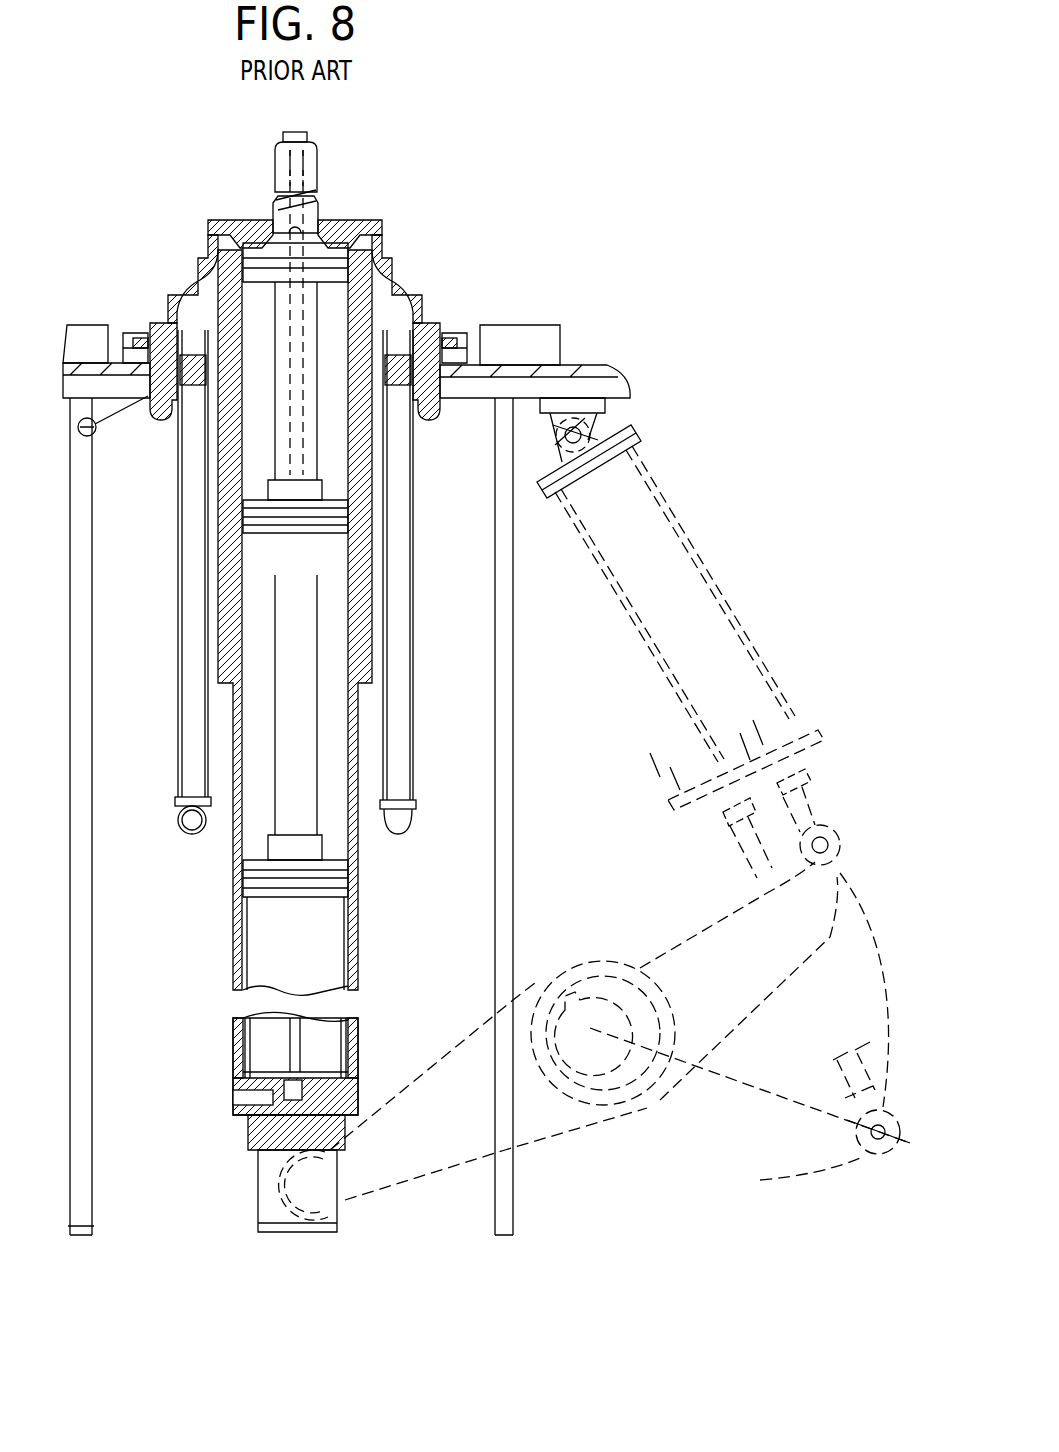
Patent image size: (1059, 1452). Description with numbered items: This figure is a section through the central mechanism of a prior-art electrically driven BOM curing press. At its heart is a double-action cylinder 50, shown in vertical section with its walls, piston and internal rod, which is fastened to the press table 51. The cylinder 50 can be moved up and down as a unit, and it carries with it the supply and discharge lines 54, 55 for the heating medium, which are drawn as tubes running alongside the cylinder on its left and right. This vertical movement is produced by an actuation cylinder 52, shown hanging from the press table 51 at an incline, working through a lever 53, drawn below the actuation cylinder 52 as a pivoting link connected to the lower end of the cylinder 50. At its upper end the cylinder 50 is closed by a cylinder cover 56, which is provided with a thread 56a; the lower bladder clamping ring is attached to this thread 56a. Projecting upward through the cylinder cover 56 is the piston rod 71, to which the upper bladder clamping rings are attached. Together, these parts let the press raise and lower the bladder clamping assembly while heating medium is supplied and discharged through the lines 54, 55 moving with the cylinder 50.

The double-action cylinder 50 is at (234, 885).
The press table 51 is at (547, 366).
The actuation cylinder 52 is at (675, 582).
The lever 53 is at (530, 1110).
The supply line 54 is at (196, 537).
The discharge line 55 is at (397, 605).
The cylinder cover 56 is at (373, 226).
The thread 56a is at (397, 280).
The piston rod 71 is at (303, 182).